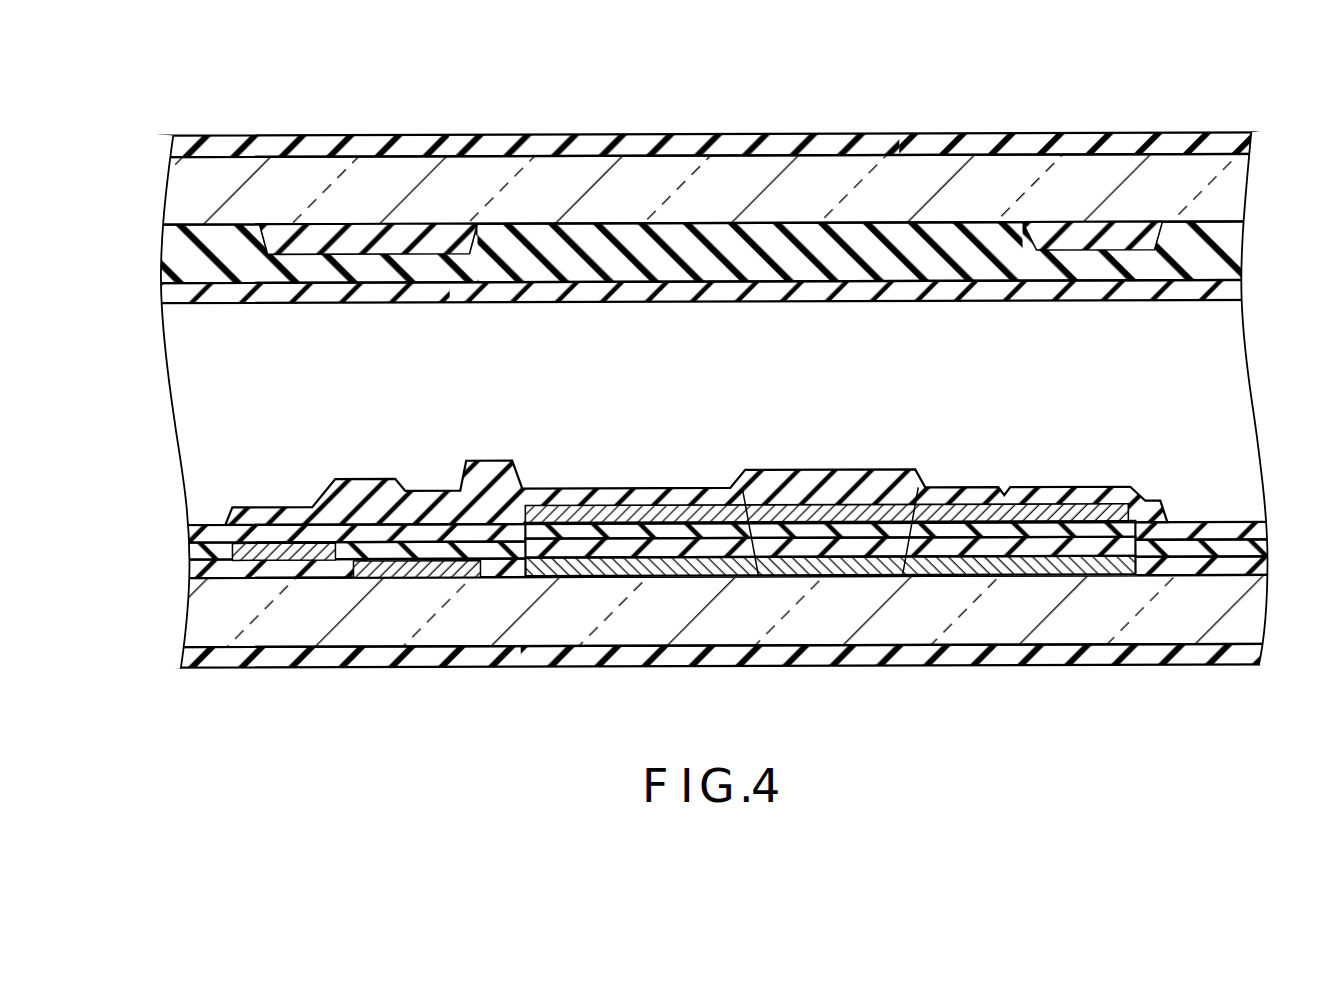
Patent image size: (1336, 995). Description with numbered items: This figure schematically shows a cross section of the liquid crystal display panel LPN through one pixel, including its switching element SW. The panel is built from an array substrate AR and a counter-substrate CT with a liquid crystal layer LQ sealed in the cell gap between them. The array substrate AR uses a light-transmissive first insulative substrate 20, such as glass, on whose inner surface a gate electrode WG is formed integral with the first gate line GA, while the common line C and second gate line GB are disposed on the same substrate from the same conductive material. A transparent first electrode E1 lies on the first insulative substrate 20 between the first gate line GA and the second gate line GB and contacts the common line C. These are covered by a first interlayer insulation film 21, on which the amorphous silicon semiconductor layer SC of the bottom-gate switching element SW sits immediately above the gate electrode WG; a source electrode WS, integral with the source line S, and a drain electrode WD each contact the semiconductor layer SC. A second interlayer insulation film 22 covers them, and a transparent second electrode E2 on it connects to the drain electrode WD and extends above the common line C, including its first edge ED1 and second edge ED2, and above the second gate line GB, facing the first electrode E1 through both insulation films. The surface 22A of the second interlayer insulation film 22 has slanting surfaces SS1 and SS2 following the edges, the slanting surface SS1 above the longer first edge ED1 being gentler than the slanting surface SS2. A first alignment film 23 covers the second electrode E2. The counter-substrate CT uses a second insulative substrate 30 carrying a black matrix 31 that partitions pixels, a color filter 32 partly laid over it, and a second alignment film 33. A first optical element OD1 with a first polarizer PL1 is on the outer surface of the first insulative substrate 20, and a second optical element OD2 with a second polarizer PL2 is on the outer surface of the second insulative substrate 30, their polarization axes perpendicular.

The liquid crystal display panel LPN is at (200, 690).
The counter-substrate CT is at (160, 157).
The array substrate AR is at (167, 525).
The liquid crystal layer LQ is at (190, 412).
The second optical element OD2 is at (674, 143).
The second polarizer PL2 is at (192, 146).
The first optical element OD1 is at (676, 670).
The first polarizer PL1 is at (190, 657).
The second insulative substrate 30 is at (1222, 186).
The black matrix 31 is at (416, 237).
The color filter 32 is at (1222, 236).
The second alignment film 33 is at (1222, 292).
The first insulative substrate 20 is at (1245, 618).
The first interlayer insulation film 21 is at (1262, 576).
The second interlayer insulation film 22 is at (1262, 547).
The surface of the second interlayer insulation film 22A is at (657, 506).
The first alignment film 23 is at (1262, 514).
The source line S is at (266, 551).
The gate electrode WG is at (392, 649).
The first gate line GA is at (385, 573).
The switching element SW is at (423, 585).
The source electrode WS is at (353, 520).
The drain electrode WD is at (480, 500).
The semiconductor layer SC is at (470, 560).
The first electrode E1 is at (645, 578).
The second electrode E2 is at (577, 505).
The first edge ED1 is at (742, 575).
The second edge ED2 is at (905, 575).
The common line C is at (833, 573).
The slanting surface SS1 is at (738, 492).
The slanting surface SS2 is at (955, 500).
The second gate line GB is at (1100, 573).